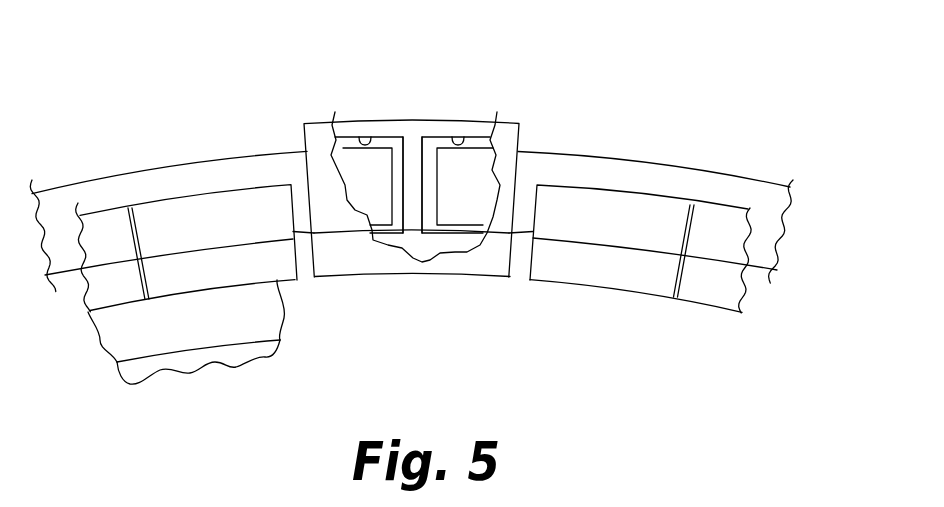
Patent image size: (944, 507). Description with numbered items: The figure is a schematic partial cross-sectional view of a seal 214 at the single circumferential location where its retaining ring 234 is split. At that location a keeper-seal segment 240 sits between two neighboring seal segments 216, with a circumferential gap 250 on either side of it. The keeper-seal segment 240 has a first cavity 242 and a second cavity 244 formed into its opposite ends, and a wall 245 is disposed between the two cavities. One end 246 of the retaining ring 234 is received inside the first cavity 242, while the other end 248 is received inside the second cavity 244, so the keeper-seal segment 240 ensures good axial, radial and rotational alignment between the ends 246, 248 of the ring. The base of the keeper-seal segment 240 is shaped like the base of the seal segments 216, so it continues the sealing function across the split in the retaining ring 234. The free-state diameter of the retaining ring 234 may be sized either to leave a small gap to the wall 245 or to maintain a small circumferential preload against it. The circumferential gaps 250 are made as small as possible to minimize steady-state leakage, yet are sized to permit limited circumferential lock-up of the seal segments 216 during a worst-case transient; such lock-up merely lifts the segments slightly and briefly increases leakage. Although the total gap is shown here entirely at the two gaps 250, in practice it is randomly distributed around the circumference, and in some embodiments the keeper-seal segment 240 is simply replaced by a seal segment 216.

The seal 214 is at (574, 46).
The seal segments 216 is at (96, 219).
The retaining ring 234 is at (647, 170).
The keeper-seal segment 240 is at (313, 128).
The first cavity 242 is at (364, 140).
The second cavity 244 is at (460, 139).
The wall 245 is at (413, 177).
The end of the retaining ring 246 is at (392, 203).
The end of the retaining ring 248 is at (446, 203).
The circumferential gaps 250 is at (307, 285).